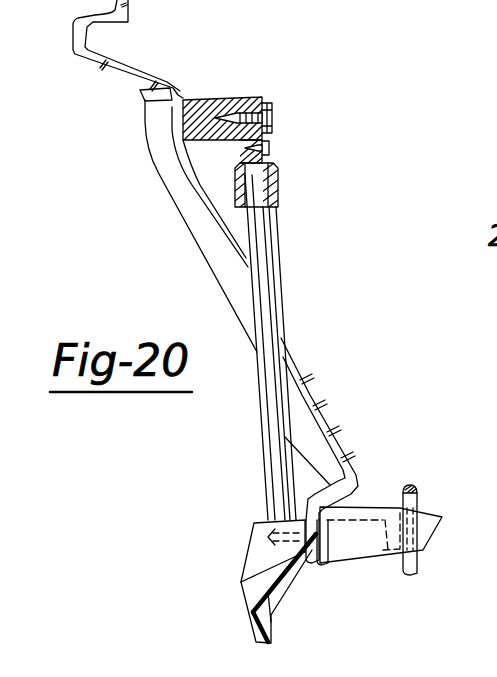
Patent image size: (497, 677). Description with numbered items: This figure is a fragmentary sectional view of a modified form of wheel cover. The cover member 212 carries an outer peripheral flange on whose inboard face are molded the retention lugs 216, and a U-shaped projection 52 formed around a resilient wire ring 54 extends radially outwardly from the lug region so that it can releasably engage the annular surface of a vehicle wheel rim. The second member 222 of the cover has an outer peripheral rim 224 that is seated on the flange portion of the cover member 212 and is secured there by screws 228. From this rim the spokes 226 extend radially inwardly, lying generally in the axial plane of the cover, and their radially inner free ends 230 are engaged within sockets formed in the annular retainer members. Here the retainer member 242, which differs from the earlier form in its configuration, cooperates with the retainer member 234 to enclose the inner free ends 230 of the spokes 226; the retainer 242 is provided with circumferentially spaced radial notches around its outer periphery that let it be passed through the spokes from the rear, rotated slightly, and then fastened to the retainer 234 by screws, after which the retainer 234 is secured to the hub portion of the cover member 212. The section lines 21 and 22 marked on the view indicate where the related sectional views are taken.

The annular retainer member 234 is at (245, 97).
The annular retainer member 242 is at (236, 170).
The radially inner free ends of spokes 230 is at (270, 188).
The section line 22 is at (285, 160).
The section line 21 is at (117, 208).
The spokes 226 is at (262, 453).
The second member 222 is at (244, 532).
The outer peripheral rim 224 is at (253, 563).
The cover member 212 is at (243, 610).
The screws 228 is at (322, 553).
The retention lugs 216 is at (380, 557).
The U-shaped projection 52 is at (418, 567).
The resilient wire ring 54 is at (417, 484).